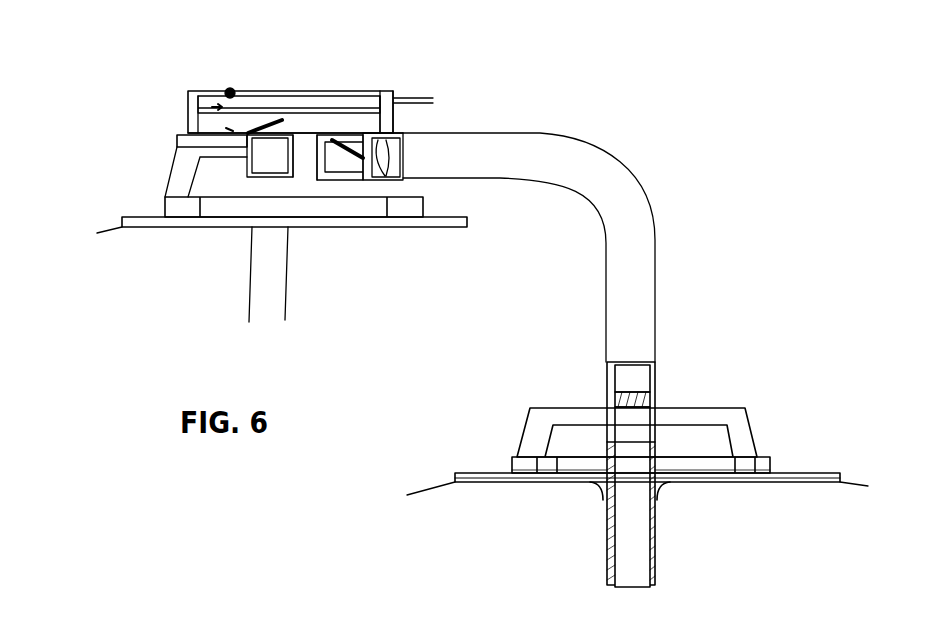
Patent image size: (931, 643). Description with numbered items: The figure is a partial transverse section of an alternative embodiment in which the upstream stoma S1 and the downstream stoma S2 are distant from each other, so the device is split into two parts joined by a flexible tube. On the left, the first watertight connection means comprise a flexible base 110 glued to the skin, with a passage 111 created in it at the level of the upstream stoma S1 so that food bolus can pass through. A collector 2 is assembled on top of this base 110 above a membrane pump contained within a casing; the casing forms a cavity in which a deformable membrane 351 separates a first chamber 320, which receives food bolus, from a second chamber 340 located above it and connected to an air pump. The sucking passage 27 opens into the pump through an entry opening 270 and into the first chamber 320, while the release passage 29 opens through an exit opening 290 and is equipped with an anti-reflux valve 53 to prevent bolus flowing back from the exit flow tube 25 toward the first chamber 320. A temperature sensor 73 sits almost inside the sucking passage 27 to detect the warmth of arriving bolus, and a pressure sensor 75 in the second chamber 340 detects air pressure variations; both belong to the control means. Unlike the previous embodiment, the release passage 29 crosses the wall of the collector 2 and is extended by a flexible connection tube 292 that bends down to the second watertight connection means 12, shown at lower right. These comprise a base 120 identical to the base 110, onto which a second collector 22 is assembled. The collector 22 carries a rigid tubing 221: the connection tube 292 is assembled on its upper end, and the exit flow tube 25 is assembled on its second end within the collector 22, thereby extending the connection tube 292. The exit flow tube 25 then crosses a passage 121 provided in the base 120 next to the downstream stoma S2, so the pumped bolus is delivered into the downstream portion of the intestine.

The collector 2 is at (170, 168).
The second watertight connection means 12 is at (468, 393).
The second collector 22 is at (553, 403).
The exit flow tube 25 is at (654, 536).
The sucking passage 27 is at (247, 158).
The release passage 29 is at (397, 180).
The anti-reflux valve 53 is at (355, 135).
The temperature sensor 73 is at (170, 146).
The pressure sensor 75 is at (247, 132).
The base 110 is at (180, 209).
The passage 111 is at (295, 229).
The base 120 is at (473, 467).
The passage 121 is at (569, 478).
The rigid tubing 221 is at (664, 380).
The entry opening 270 is at (232, 97).
The exit opening 290 is at (390, 131).
The flexible connection tube 292 is at (563, 143).
The first chamber 320 is at (397, 128).
The second chamber 340 is at (319, 88).
The deformable membrane 351 is at (220, 103).
The upstream stoma S1 is at (233, 131).
The downstream stoma S2 is at (592, 509).